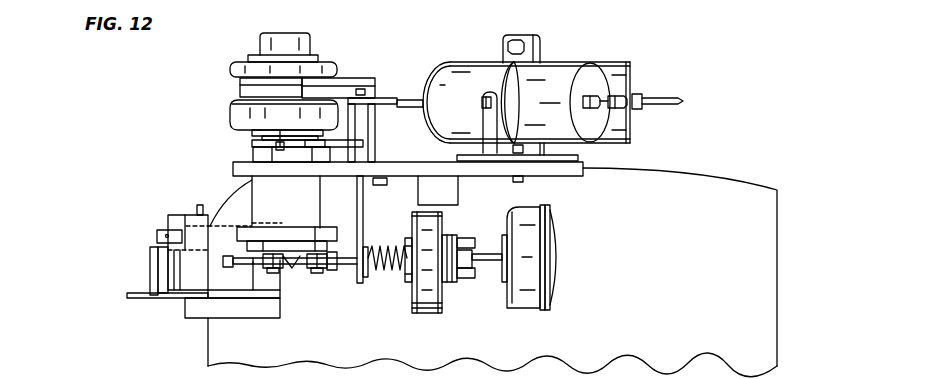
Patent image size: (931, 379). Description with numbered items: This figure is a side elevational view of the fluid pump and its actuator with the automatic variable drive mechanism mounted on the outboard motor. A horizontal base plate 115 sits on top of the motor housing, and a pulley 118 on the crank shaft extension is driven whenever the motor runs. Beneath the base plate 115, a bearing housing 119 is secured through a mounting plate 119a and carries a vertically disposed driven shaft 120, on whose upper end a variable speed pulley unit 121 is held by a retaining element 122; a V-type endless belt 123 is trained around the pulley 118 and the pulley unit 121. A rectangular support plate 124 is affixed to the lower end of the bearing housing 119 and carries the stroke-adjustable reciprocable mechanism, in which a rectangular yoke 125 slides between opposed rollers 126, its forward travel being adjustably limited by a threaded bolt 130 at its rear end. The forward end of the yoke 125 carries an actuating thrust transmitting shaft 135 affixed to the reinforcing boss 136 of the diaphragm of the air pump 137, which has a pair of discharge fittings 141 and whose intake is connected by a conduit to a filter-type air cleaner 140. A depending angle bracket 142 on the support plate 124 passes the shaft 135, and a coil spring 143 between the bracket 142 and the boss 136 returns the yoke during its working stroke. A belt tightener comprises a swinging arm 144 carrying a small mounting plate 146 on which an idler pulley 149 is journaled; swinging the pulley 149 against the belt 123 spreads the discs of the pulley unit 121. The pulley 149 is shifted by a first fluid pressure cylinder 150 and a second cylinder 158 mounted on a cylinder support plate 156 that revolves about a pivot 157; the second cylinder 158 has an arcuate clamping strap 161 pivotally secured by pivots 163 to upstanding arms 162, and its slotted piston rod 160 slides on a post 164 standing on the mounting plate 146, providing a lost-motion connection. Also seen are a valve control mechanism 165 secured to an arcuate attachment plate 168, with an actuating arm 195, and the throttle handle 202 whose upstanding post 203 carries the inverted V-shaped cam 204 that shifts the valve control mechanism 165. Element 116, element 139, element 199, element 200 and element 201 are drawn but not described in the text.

The base plate 115 is at (246, 161).
The post 116 is at (375, 132).
The pulley 118 is at (371, 78).
The bearing housing 119 is at (492, 272).
The mounting plate 119a is at (233, 169).
The driven shaft 120 is at (283, 147).
The variable speed pulley unit 121 is at (232, 115).
The retaining element 122 is at (282, 42).
The belt 123 is at (240, 88).
The support plate 124 is at (333, 228).
The yoke 125 is at (262, 270).
The rollers 126 is at (294, 268).
The threaded bolt 130 is at (225, 262).
The actuating thrust transmitting shaft 135 is at (348, 265).
The reinforcing boss 136 is at (408, 283).
The air pump 137 is at (428, 310).
The shaft 139 is at (488, 262).
The air cleaner 140 is at (527, 305).
The discharge fittings 141 is at (468, 240).
The angle bracket 142 is at (363, 200).
The coil spring 143 is at (386, 250).
The arm 144 is at (252, 144).
The mounting plate 146 is at (355, 145).
The pulley 149 is at (343, 78).
The first fluid pressure cylinder 150 is at (630, 76).
The cylinder support plate 156 is at (578, 158).
The pivot 157 is at (518, 176).
The second cylinder 158 is at (458, 66).
The piston rod 160 is at (410, 100).
The arcuate clamping strap 161 is at (502, 75).
The upstanding arms 162 is at (483, 120).
The pivots 163 is at (482, 101).
The post 164 is at (356, 118).
The valve control mechanism 165 is at (172, 214).
The attachment plate 168 is at (224, 232).
The actuating arm 195 is at (157, 235).
The rod 199 is at (676, 98).
The nut 200 is at (625, 104).
The nut 201 is at (600, 90).
The throttle handle 202 is at (172, 297).
The post 203 is at (150, 283).
The cam 204 is at (150, 258).